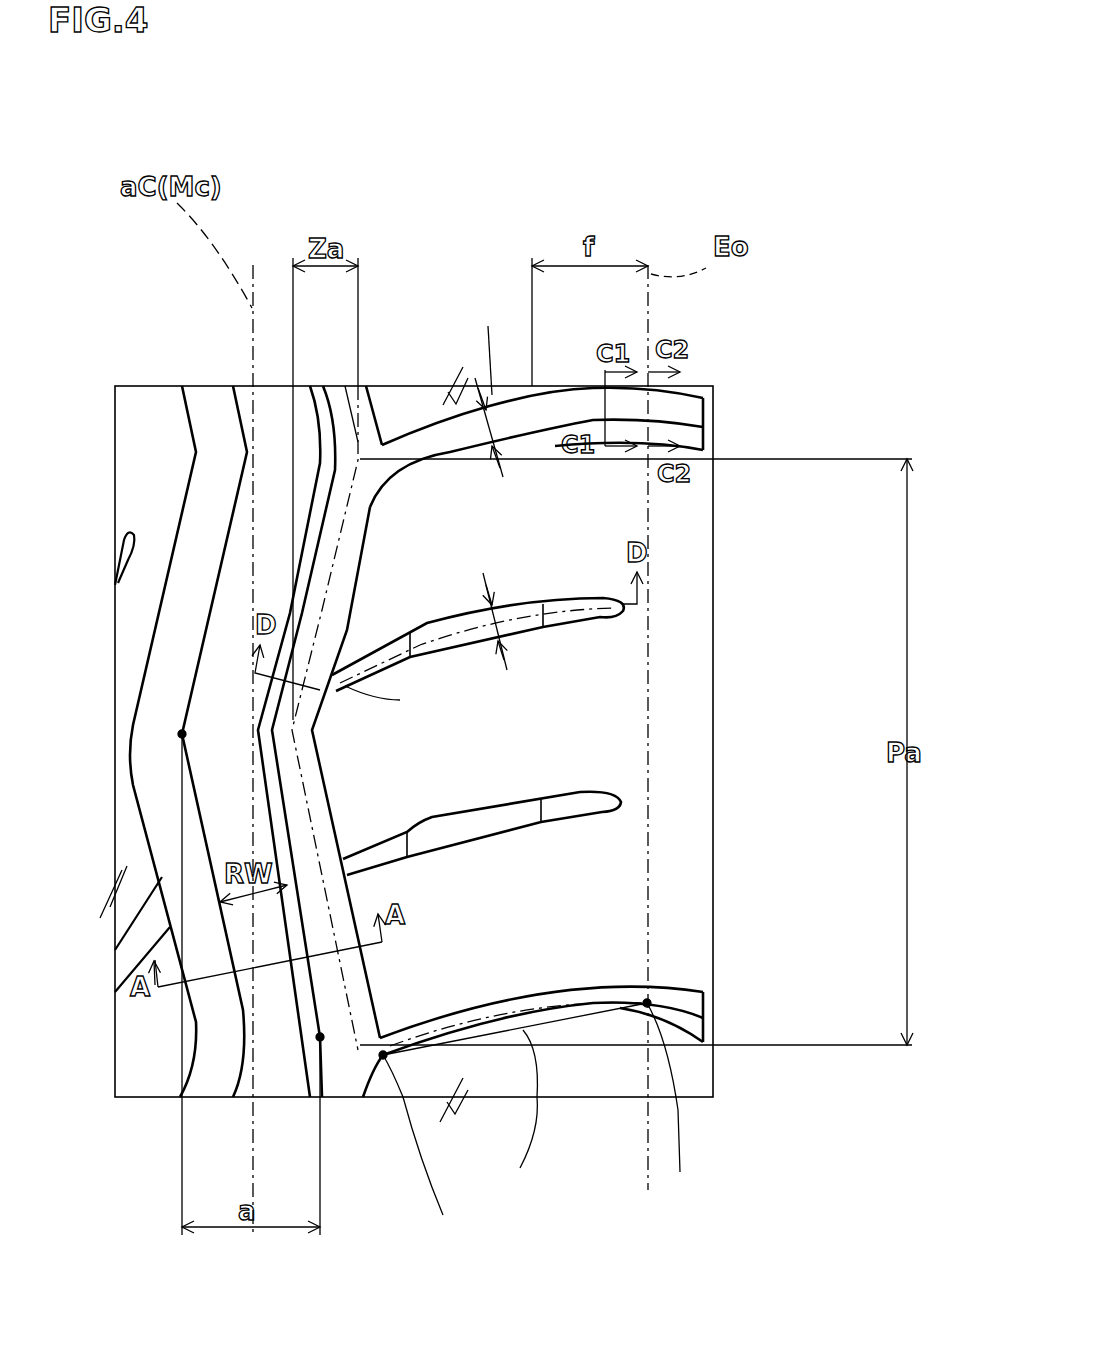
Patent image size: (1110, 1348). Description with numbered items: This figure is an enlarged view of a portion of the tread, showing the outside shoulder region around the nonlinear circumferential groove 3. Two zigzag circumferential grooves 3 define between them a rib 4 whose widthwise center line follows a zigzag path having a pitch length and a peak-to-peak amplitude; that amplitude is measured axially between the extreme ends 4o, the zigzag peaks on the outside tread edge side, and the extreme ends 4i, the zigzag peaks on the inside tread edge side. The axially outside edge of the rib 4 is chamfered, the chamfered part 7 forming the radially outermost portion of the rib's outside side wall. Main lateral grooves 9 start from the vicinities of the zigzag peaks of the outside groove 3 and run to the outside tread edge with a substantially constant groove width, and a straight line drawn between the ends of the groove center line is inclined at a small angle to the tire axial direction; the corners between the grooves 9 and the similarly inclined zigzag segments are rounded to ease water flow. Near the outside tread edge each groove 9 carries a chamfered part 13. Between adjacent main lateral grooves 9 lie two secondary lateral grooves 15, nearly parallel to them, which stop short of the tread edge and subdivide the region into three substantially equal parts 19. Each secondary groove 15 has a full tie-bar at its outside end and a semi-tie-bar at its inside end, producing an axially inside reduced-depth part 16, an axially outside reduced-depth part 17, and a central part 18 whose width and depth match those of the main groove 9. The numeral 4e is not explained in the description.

The circumferential groove 3 is at (207, 400).
The rib 4 is at (228, 647).
The extreme end on inside tread edge side 4i is at (182, 734).
The outer edge of rib 4e is at (307, 985).
The extreme end on outside tread edge side 4o is at (320, 1037).
The chamfered part 7 is at (313, 535).
The main lateral groove 9 is at (679, 420).
The chamfered part 13 is at (698, 404).
The secondary lateral groove 15 is at (520, 627).
The axially inside reduced-depth part 16 is at (365, 655).
The axially outside reduced-depth part 17 is at (577, 807).
The central part 18 is at (503, 815).
The part 19 is at (444, 533).